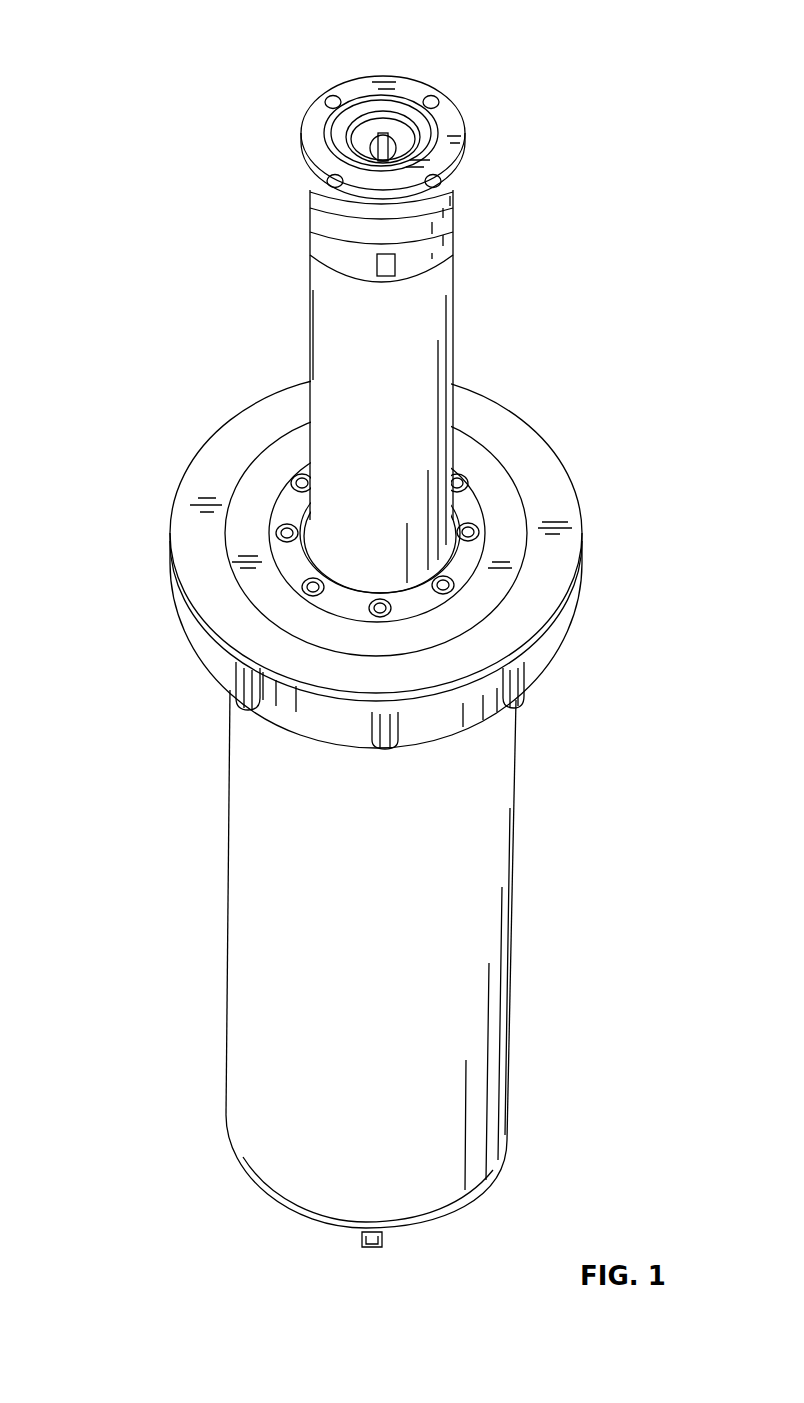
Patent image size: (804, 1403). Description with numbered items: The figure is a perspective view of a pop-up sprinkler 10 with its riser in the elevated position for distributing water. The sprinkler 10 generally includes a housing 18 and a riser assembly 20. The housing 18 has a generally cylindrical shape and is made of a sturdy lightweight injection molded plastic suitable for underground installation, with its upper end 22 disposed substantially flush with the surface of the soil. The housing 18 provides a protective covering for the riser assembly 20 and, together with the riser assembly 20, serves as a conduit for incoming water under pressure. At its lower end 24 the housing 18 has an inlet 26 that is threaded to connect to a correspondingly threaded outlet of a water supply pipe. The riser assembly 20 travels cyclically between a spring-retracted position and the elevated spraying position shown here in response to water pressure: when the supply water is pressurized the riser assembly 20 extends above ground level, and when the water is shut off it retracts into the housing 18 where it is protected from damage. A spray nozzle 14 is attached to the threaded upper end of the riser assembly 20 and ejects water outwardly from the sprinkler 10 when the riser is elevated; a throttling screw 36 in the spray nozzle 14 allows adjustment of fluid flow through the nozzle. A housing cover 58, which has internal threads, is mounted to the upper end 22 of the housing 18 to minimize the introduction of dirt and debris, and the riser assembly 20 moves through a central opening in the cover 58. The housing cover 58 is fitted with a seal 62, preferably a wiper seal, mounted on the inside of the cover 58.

The pop-up sprinkler 10 is at (120, 66).
The spray nozzle 14 is at (418, 88).
The housing 18 is at (508, 776).
The riser assembly 20 is at (438, 331).
The upper end 22 is at (240, 754).
The lower end 24 is at (285, 1203).
The inlet 26 is at (345, 1234).
The throttling screw 36 is at (382, 138).
The housing cover 58 is at (548, 480).
The seal 62 is at (283, 510).